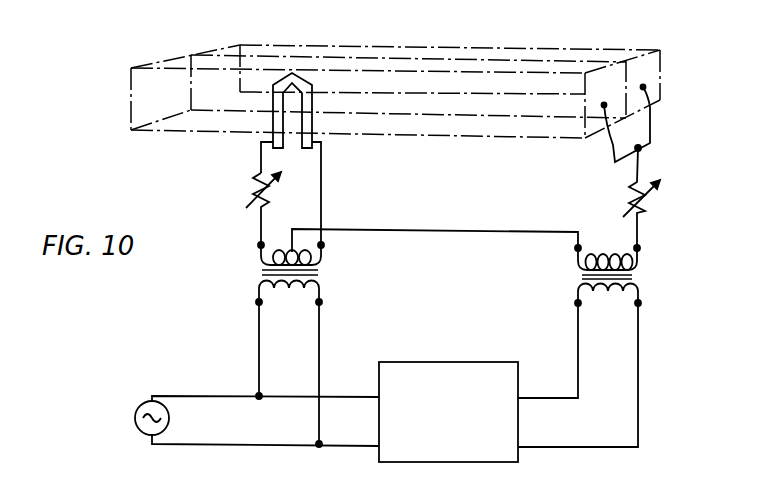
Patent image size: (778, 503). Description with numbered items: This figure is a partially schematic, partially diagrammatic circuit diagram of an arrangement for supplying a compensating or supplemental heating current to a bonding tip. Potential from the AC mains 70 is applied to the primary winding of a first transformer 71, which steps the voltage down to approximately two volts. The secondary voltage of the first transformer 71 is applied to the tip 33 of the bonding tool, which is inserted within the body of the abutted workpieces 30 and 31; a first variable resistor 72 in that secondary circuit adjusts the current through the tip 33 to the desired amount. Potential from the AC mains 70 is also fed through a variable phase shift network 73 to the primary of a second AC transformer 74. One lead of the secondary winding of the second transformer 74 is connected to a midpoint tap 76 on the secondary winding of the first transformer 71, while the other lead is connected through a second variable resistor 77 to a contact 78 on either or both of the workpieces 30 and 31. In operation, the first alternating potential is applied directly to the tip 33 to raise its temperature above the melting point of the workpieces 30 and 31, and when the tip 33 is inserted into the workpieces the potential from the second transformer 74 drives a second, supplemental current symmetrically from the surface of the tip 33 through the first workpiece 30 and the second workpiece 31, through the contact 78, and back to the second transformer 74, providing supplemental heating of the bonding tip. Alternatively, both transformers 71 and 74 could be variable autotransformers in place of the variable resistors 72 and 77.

The first workpiece 30 is at (150, 63).
The second workpiece 31 is at (227, 45).
The tip 33 is at (293, 75).
The AC mains 70 is at (140, 407).
The first transformer 71 is at (323, 278).
The first variable resistor 72 is at (252, 182).
The variable phase shift network 73 is at (478, 362).
The second AC transformer 74 is at (640, 285).
The midpoint tap 76 is at (290, 242).
The second variable resistor 77 is at (632, 188).
The contact 78 is at (604, 105).